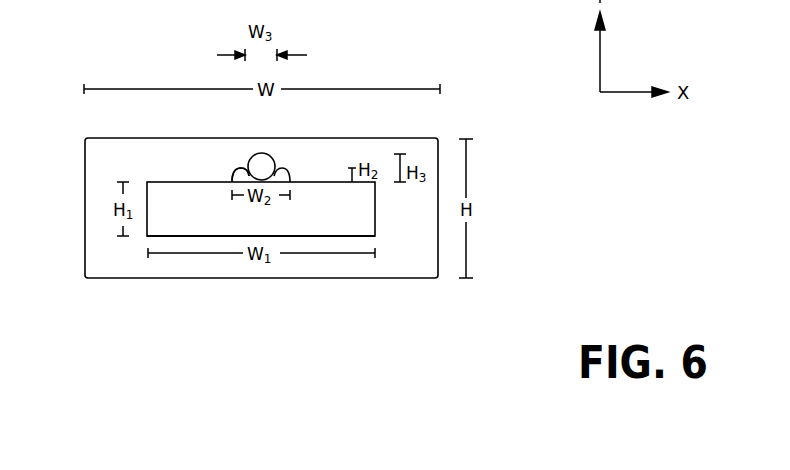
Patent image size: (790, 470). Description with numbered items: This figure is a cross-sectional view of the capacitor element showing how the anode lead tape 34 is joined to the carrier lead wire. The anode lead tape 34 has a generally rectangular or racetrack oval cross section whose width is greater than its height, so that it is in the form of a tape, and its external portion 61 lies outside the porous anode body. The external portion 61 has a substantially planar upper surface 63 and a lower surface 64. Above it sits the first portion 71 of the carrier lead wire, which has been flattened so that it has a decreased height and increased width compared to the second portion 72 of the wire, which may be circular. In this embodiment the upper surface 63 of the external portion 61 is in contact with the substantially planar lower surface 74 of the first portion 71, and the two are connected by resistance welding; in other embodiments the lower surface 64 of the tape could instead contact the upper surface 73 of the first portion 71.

The anode lead tape 34 is at (111, 266).
The external portion of the anode lead tape 61 is at (262, 232).
The upper surface of the external portion of the anode lead tape 63 is at (167, 184).
The lower surface of the external portion of the anode lead tape 64 is at (188, 236).
The first portion of the carrier lead wire 71 is at (288, 172).
The second portion of the carrier lead wire 72 is at (262, 165).
The upper surface of the first portion of the carrier lead wire 73 is at (242, 168).
The lower surface of the first portion of the carrier lead wire 74 is at (236, 172).